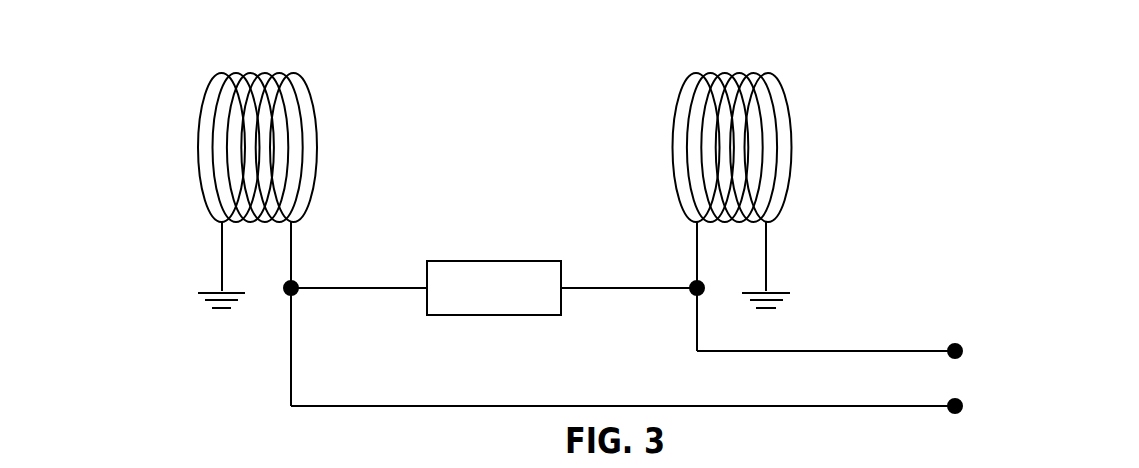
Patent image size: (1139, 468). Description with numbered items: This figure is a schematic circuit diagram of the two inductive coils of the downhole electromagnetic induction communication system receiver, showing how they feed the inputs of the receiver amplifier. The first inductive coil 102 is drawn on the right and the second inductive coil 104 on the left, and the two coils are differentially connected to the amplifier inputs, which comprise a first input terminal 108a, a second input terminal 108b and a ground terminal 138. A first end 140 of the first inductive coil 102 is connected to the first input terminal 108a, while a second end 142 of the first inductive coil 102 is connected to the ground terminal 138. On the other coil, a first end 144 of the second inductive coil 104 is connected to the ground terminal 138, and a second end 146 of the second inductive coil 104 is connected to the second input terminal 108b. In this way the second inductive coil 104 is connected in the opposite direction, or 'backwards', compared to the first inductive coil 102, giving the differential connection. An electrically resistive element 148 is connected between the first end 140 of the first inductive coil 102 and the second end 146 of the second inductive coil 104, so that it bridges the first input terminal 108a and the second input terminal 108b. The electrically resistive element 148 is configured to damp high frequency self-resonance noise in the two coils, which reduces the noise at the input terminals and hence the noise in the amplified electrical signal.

The first inductive coil 102 is at (737, 73).
The second inductive coil 104 is at (263, 73).
The first input terminal 108a is at (958, 345).
The second input terminal 108b is at (958, 411).
The ground terminal 138 is at (225, 313).
The first end of the first inductive coil 140 is at (697, 240).
The second end of the first inductive coil 142 is at (767, 240).
The first end of the second inductive coil 144 is at (222, 248).
The second end of the second inductive coil 146 is at (293, 237).
The electrically resistive element 148 is at (523, 302).